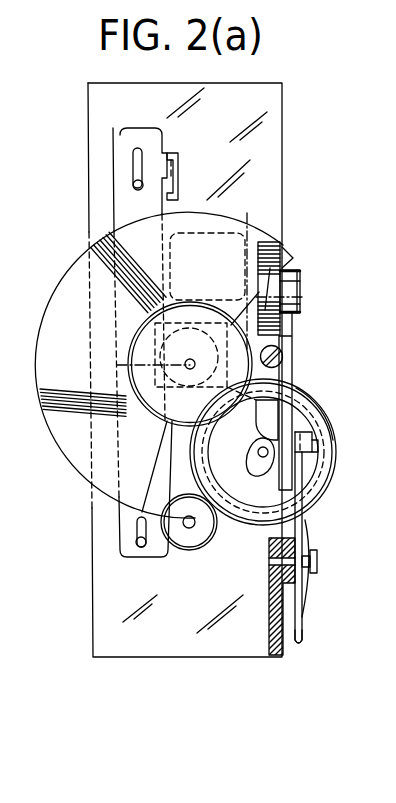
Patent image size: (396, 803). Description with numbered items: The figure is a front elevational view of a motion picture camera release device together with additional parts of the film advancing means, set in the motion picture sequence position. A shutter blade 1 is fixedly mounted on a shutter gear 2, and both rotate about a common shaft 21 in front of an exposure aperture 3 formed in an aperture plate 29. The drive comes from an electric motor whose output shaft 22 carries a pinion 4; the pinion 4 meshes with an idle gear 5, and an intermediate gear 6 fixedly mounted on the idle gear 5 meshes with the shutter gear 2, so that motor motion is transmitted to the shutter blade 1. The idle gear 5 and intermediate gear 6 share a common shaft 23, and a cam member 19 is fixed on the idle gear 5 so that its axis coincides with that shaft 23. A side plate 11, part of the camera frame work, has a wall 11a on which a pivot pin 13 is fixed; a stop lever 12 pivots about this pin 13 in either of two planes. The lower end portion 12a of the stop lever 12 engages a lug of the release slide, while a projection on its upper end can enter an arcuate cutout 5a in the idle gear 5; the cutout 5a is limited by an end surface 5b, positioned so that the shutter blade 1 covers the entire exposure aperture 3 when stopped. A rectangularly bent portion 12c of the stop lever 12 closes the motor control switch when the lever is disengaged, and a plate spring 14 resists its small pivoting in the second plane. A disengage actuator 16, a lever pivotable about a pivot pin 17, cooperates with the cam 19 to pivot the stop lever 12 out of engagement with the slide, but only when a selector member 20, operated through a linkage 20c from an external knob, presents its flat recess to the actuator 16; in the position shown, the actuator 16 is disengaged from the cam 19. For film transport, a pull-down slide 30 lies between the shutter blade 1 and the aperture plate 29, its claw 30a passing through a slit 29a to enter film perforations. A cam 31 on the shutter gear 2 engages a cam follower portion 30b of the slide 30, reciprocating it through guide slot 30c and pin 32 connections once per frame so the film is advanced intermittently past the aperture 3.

The shutter blade 1 is at (78, 280).
The shutter gear 2 is at (148, 343).
The exposure aperture 3 is at (229, 260).
The pinion 4 is at (188, 538).
The idle gear 5 is at (252, 522).
The arcuate cutout 5a is at (312, 406).
The end surface of cutout 5b is at (322, 447).
The intermediate gear 6 is at (240, 494).
The side plate 11 is at (277, 650).
The wall of side plate 11a is at (271, 562).
The stop lever 12 is at (303, 482).
The lower end portion of stop lever 12a is at (300, 647).
The rectangularly bent portion of stop lever 12c is at (313, 440).
The pivot pin 13 is at (318, 560).
The plate spring 14 is at (309, 598).
The disengage actuator 16 is at (285, 340).
The pivot pin 17 is at (284, 360).
The cam member 19 is at (250, 452).
The selector member 20 is at (283, 250).
The linkage 20c is at (303, 298).
The common shaft 21 is at (187, 370).
The output shaft 22 is at (183, 527).
The common shaft 23 is at (266, 458).
The aperture plate 29 is at (267, 112).
The slit 29a is at (185, 193).
The pull-down slide 30 is at (127, 134).
The claw 30a is at (178, 167).
The cam follower portion 30b is at (147, 352).
The guide slot 30c is at (133, 159).
The cam 31 is at (142, 369).
The pin 32 is at (133, 185).